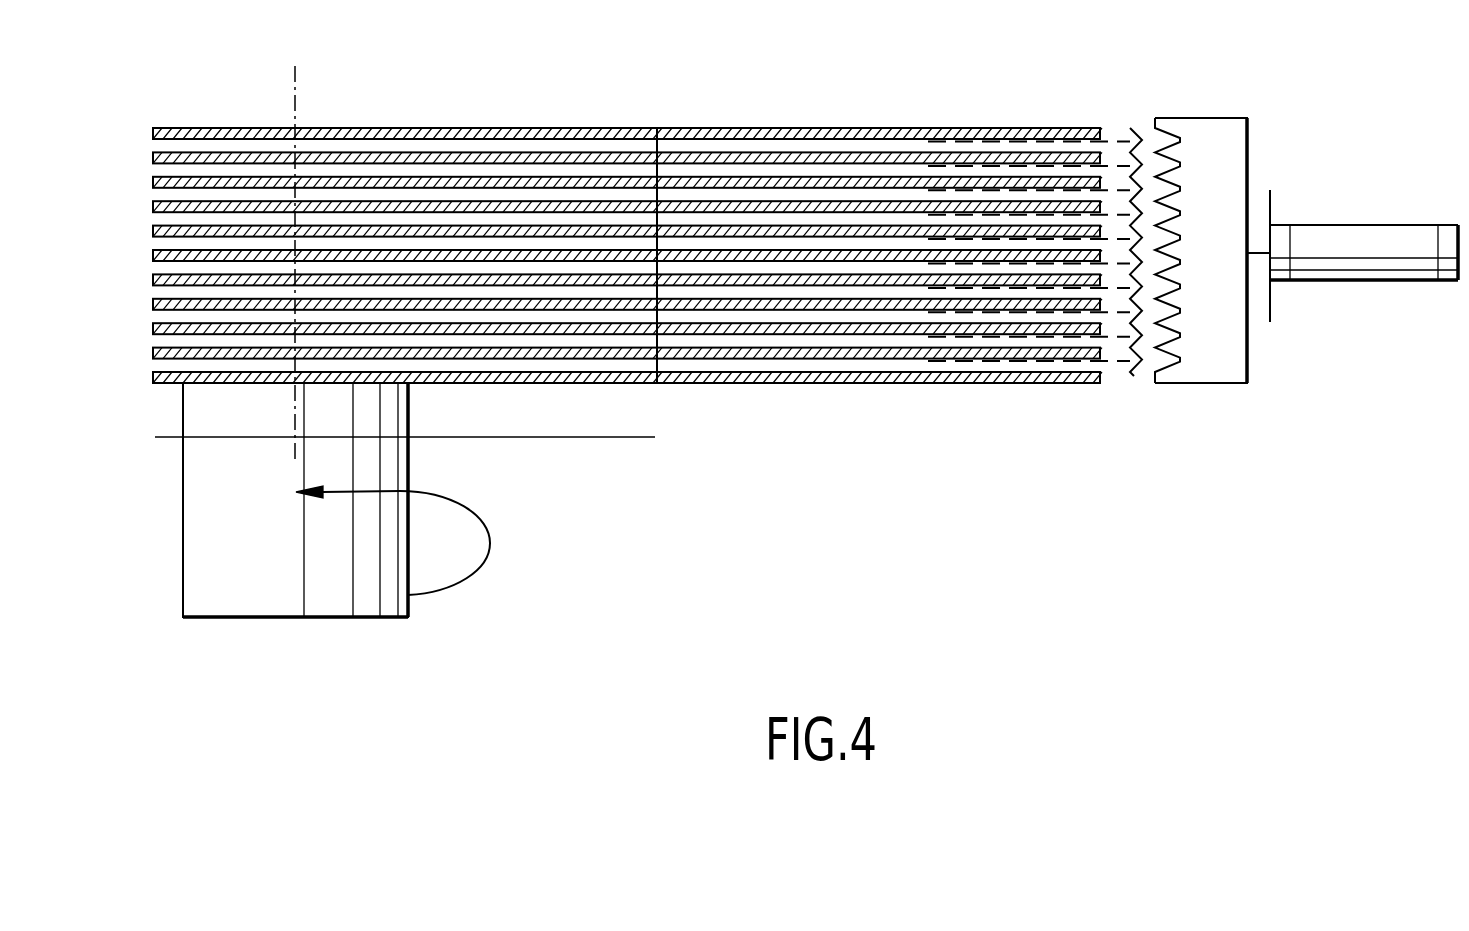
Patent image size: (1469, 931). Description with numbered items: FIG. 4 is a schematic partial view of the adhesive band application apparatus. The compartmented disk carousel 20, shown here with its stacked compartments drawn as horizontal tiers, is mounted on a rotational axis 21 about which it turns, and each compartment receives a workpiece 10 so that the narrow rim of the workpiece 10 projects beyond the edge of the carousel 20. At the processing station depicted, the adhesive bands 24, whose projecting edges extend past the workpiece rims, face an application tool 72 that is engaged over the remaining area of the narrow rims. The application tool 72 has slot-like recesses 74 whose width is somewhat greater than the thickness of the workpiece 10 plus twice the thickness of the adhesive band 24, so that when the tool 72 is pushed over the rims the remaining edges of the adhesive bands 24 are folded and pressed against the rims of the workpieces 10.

The compartmented disk carousel 20 is at (466, 127).
The workpiece 10 is at (1100, 139).
The adhesive band 24 is at (1130, 128).
The slot-like recess 74 is at (1178, 140).
The application tool 72 is at (1215, 372).
The rotational axis 21 is at (203, 566).